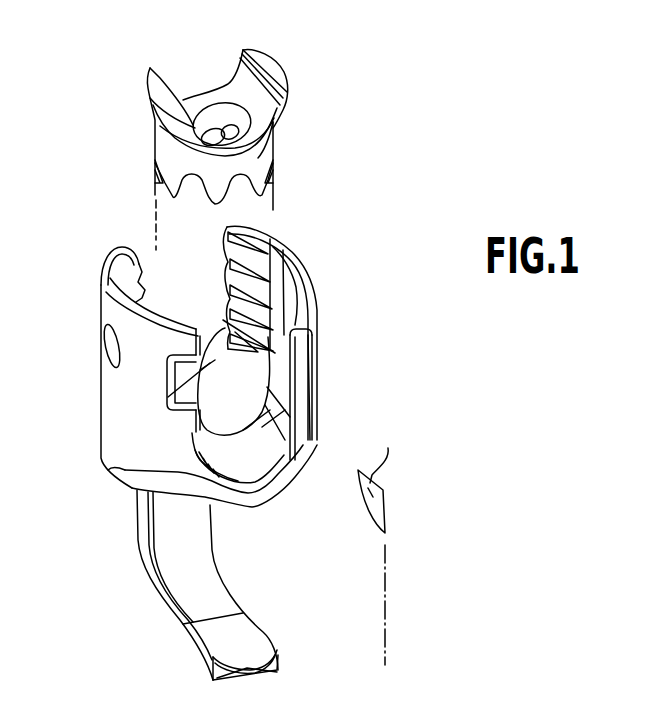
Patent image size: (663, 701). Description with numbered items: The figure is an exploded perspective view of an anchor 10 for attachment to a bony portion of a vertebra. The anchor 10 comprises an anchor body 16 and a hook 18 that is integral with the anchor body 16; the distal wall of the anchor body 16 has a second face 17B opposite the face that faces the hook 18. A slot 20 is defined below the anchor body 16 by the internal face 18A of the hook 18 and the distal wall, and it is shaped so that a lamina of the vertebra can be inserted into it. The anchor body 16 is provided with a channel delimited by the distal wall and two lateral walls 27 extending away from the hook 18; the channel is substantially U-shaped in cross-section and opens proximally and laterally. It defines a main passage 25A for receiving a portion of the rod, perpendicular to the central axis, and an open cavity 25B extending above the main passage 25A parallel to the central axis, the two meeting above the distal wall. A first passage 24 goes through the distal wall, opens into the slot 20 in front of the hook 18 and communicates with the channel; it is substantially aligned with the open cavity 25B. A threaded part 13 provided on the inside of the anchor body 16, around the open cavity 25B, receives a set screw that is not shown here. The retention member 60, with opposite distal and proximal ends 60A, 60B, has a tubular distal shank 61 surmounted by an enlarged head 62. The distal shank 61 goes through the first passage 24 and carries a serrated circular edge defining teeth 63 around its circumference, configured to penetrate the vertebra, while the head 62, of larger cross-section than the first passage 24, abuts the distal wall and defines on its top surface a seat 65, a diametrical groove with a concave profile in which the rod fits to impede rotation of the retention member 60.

The anchor 10 is at (353, 233).
The threaded part 13 is at (222, 263).
The anchor body 16 is at (97, 363).
The second face 17B is at (253, 427).
The hook 18 is at (143, 580).
The internal face 18A is at (203, 593).
The slot 20 is at (300, 590).
The first passage 24 is at (223, 420).
The main passage 25A is at (250, 460).
The open cavity 25B is at (170, 290).
The lateral walls 27 is at (320, 303).
The retention member 60 is at (180, 67).
The distal end 60A is at (147, 167).
The proximal end 60B is at (140, 88).
The distal shank 61 is at (262, 157).
The head 62 is at (273, 67).
The teeth 63 is at (214, 197).
The seat 65 is at (208, 96).